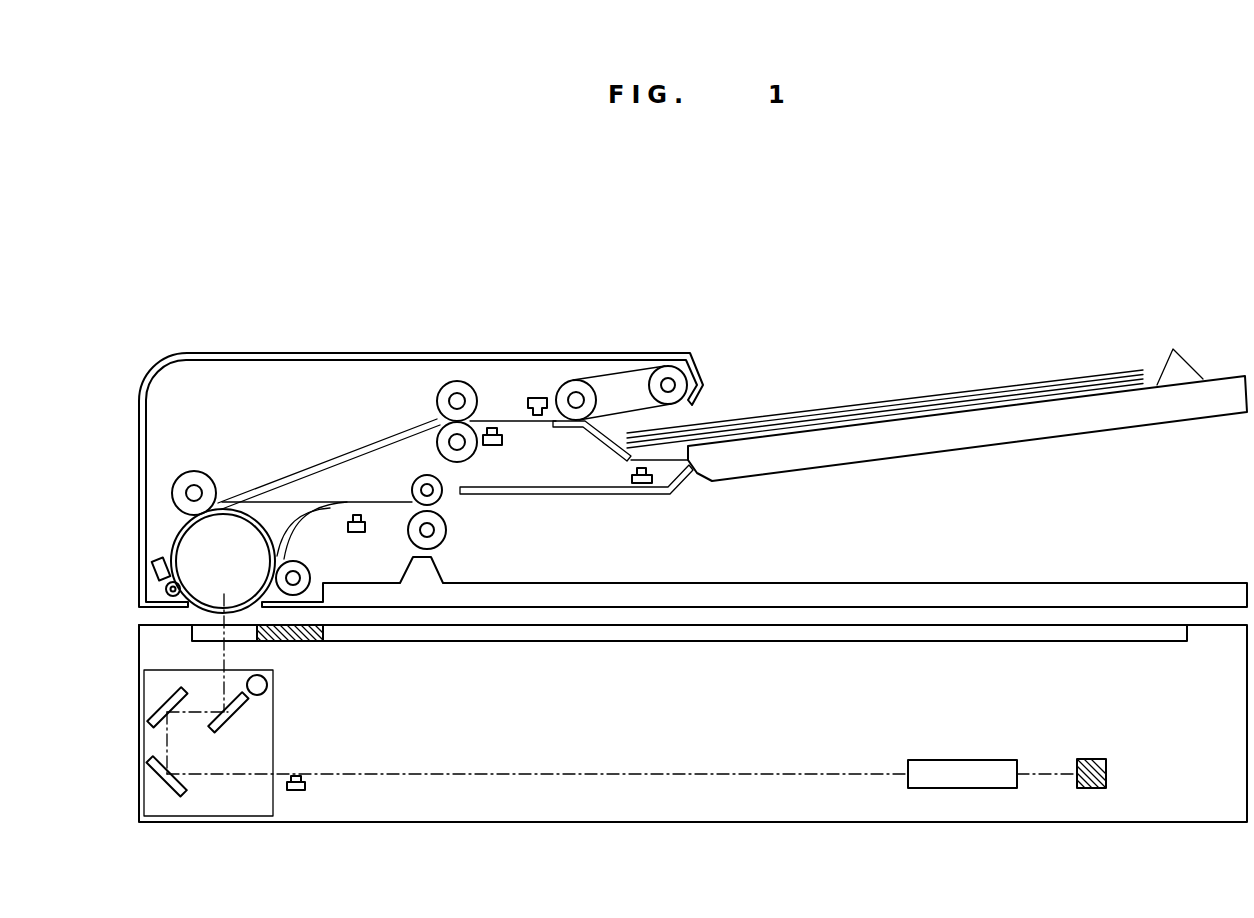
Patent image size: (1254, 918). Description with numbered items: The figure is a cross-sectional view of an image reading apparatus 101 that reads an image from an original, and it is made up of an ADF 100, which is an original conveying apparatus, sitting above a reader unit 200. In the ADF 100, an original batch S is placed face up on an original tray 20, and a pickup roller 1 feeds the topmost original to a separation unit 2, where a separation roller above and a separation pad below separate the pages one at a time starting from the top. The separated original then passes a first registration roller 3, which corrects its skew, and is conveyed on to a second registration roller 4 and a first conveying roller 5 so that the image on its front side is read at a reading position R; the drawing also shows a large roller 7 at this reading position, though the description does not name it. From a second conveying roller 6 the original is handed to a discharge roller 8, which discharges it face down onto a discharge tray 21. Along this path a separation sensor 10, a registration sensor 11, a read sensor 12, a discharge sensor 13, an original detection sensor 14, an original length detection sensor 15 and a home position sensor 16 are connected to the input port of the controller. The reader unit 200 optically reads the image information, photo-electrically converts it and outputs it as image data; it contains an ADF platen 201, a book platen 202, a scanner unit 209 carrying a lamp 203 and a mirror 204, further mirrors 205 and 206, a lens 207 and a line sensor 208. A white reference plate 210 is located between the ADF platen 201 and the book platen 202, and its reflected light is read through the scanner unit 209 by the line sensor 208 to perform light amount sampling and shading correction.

The image reading apparatus 101 is at (749, 252).
The ADF (Automatic Document Feeder) 100 is at (297, 331).
The reader unit 200 is at (617, 867).
The pickup roller 1 is at (655, 402).
The separation unit 2 is at (557, 394).
The first registration roller 3 is at (437, 402).
The second registration roller 4 is at (196, 471).
The first conveying roller 5 is at (165, 591).
The second conveying roller 6 is at (302, 565).
The platen roller 7 is at (257, 533).
The discharge roller 8 is at (449, 531).
The separation sensor 10 is at (527, 402).
The registration sensor 11 is at (493, 446).
The read sensor 12 is at (160, 560).
The discharge sensor 13 is at (357, 533).
The original detection sensor 14 is at (632, 478).
The original length detection sensor 15 is at (1178, 352).
The home position sensor 16 is at (305, 787).
The original tray 20 is at (985, 448).
The discharge tray 21 is at (755, 583).
The ADF platen 201 is at (190, 628).
The book platen 202 is at (484, 641).
The lamp 203 is at (265, 684).
The mirror 204 is at (233, 716).
The mirror 205 is at (163, 694).
The mirror 206 is at (165, 789).
The lens 207 is at (963, 760).
The line sensor 208 is at (1092, 759).
The scanner unit 209 is at (274, 716).
The white reference plate 210 is at (322, 641).
The reading position R is at (233, 589).
The original batch S is at (943, 392).